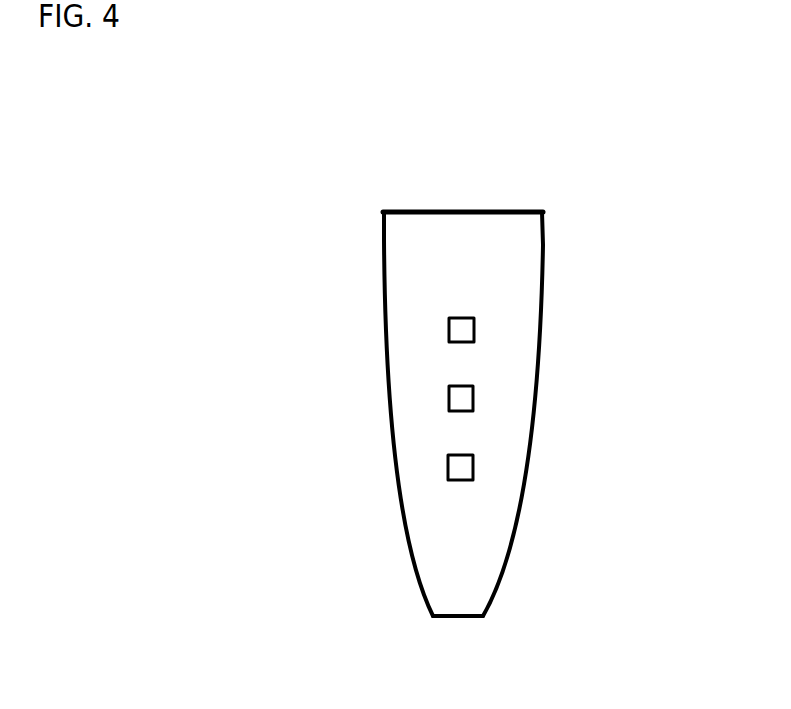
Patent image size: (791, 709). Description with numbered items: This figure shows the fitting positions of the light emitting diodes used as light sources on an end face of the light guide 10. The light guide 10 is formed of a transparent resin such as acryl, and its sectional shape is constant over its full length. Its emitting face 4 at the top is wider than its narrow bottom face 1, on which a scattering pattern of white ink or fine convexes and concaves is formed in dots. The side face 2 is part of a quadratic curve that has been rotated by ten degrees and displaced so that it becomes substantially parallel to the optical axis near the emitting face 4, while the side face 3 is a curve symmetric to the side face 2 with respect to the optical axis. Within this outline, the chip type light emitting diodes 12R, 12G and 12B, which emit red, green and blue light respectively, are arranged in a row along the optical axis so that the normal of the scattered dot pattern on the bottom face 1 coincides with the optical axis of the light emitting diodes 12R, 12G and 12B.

The bottom face 1 is at (458, 618).
The side face 2 is at (513, 530).
The side face 3 is at (384, 273).
The emitting face 4 is at (465, 212).
The light guide 10 is at (503, 417).
The light emitting diode 12R is at (474, 330).
The light emitting diode 12G is at (473, 398).
The light emitting diode 12B is at (473, 466).